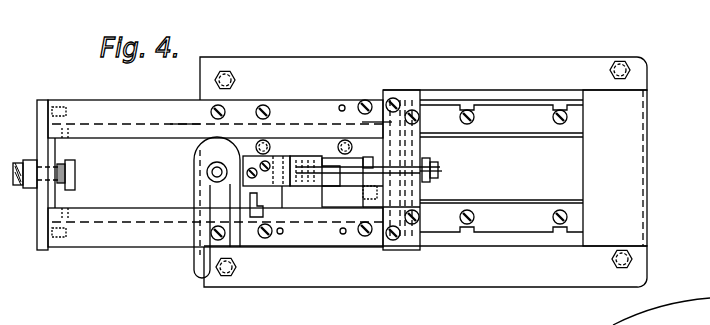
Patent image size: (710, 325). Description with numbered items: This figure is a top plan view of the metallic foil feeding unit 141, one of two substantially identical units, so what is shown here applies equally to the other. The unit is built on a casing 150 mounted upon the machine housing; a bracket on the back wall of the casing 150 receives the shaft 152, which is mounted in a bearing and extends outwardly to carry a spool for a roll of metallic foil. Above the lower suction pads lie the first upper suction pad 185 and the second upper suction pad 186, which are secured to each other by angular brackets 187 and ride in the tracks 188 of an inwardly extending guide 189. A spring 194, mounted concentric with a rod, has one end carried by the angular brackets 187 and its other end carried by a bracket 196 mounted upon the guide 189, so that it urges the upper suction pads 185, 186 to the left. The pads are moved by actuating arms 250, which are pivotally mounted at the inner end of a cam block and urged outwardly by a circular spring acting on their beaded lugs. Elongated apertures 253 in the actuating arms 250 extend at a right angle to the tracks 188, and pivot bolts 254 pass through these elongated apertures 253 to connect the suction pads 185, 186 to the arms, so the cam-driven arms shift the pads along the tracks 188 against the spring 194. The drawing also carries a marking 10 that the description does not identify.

The rail guide 10 is at (185, 121).
The metallic foil feeding unit 141 is at (482, 58).
The casing 150 is at (550, 262).
The shaft 152 is at (661, 311).
The first upper suction pad 185 is at (342, 148).
The second upper suction pad 186 is at (277, 152).
The angular brackets 187 is at (284, 160).
The tracks 188 is at (122, 150).
The inwardly extending guide 189 is at (80, 240).
The spring 194 is at (293, 167).
The bracket 196 is at (422, 118).
The actuating arms 250 is at (200, 244).
The elongated apertures 253 is at (209, 257).
The pivot bolts 254 is at (207, 171).